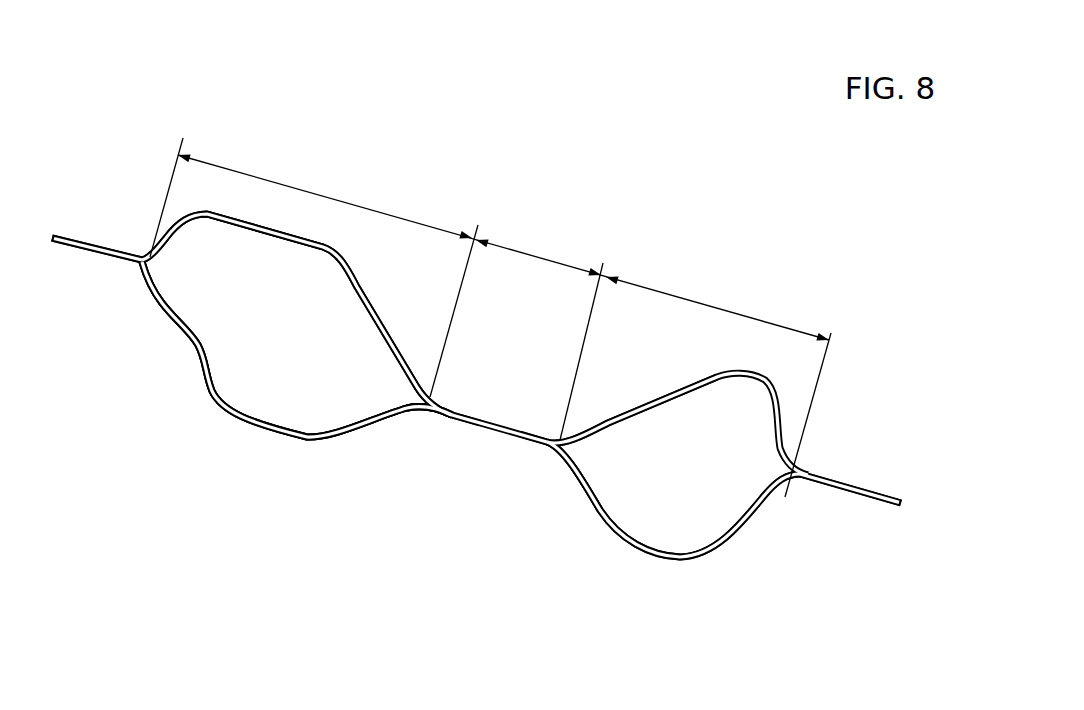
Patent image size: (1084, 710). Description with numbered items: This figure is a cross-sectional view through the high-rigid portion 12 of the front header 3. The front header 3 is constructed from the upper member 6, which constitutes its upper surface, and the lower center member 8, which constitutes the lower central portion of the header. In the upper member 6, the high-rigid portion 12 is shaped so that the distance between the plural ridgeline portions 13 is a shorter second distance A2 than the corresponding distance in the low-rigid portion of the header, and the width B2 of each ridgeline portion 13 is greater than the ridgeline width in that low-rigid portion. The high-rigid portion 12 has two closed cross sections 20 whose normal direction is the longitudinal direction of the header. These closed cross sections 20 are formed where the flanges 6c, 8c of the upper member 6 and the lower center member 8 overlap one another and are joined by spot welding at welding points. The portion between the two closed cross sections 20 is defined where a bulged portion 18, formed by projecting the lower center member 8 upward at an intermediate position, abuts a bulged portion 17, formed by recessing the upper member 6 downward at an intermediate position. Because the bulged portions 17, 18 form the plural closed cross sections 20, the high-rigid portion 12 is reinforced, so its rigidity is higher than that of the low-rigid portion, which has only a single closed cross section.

The front header 3 is at (502, 362).
The upper member 6 is at (624, 410).
The flange 6c is at (88, 233).
The lower center member 8 is at (587, 502).
The flange 8c is at (92, 260).
The high-rigid portion 12 is at (223, 193).
The ridgeline portions 13 is at (276, 226).
The bulged portion 17 is at (407, 382).
The bulged portion 18 is at (575, 463).
The closed cross sections 20 is at (247, 360).
The second distance A2 is at (516, 330).
The width B2 is at (490, 317).